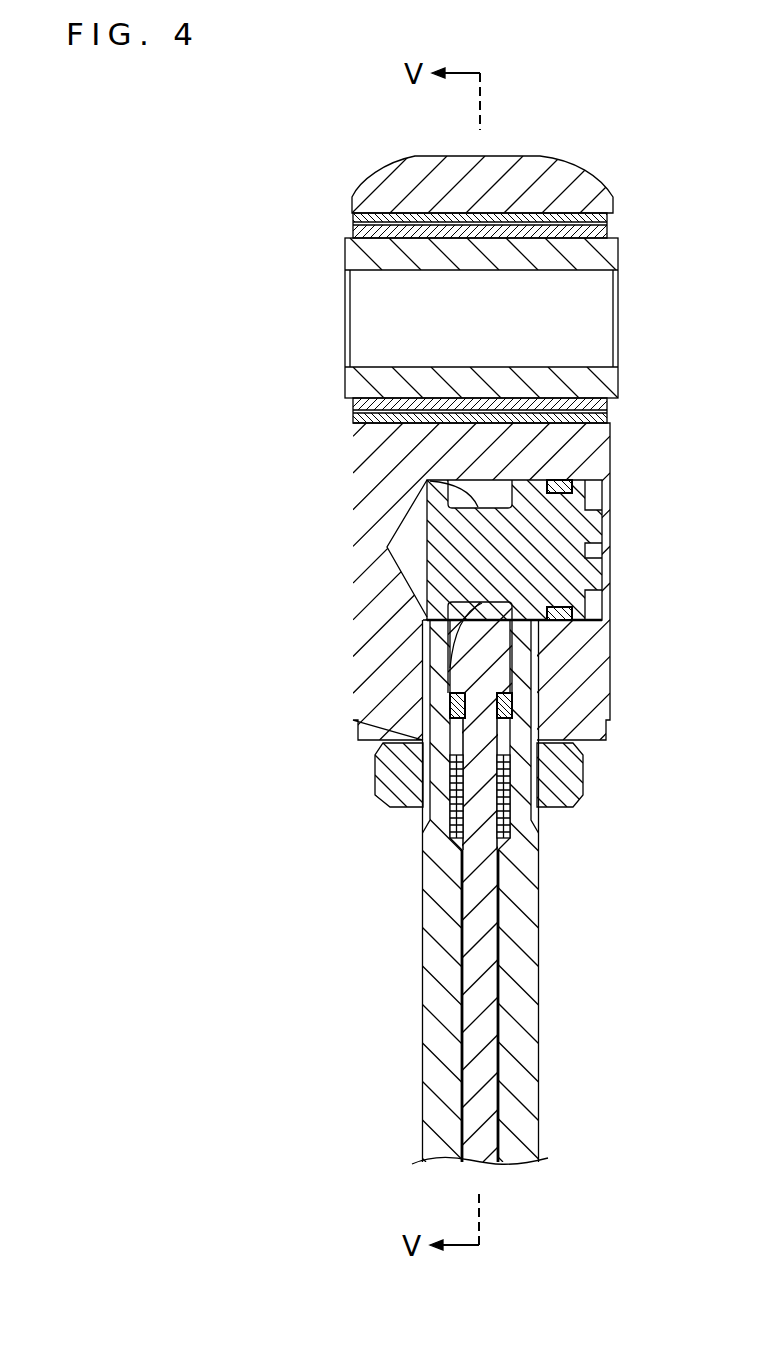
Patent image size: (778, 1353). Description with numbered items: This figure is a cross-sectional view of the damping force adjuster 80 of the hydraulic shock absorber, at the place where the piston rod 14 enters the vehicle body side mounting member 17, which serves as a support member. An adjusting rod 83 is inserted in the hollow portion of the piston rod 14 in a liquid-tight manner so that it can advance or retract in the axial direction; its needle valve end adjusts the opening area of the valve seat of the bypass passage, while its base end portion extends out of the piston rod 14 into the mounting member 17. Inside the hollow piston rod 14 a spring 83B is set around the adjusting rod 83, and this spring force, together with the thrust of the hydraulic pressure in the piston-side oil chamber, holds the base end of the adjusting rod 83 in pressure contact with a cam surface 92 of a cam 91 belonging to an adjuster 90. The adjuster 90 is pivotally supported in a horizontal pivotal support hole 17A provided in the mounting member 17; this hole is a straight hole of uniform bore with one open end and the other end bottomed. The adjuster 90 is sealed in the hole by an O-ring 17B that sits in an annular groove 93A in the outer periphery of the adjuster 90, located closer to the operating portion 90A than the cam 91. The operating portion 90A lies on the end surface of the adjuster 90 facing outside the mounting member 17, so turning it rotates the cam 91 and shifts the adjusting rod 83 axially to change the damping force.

The piston rod 14 is at (428, 1028).
The vehicle body side mounting member 17 is at (360, 453).
The pivotal support hole 17A is at (588, 607).
The O-ring 17B is at (565, 626).
The damping force adjuster 80 is at (566, 531).
The adjusting rod 83 is at (483, 957).
The spring 83B is at (513, 808).
The adjuster 90 is at (567, 533).
The operating portion 90A is at (588, 549).
The cam 91 is at (430, 482).
The cam surface 92 is at (462, 662).
The annular groove 93A is at (558, 480).